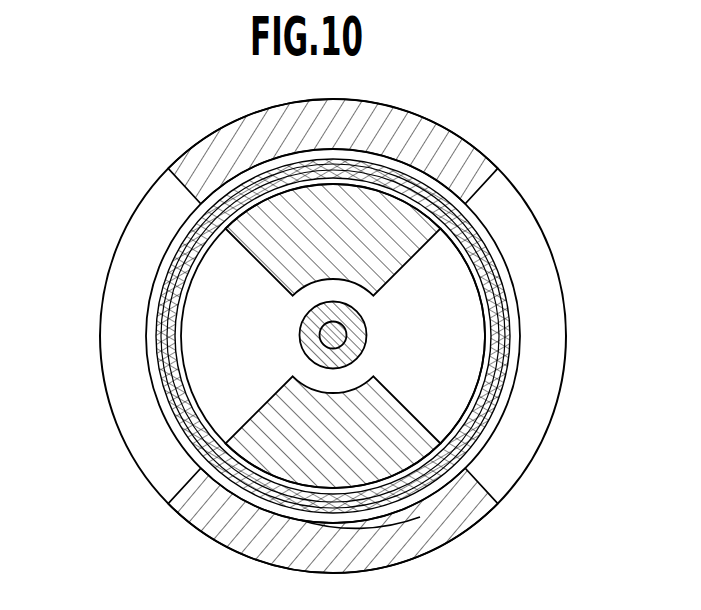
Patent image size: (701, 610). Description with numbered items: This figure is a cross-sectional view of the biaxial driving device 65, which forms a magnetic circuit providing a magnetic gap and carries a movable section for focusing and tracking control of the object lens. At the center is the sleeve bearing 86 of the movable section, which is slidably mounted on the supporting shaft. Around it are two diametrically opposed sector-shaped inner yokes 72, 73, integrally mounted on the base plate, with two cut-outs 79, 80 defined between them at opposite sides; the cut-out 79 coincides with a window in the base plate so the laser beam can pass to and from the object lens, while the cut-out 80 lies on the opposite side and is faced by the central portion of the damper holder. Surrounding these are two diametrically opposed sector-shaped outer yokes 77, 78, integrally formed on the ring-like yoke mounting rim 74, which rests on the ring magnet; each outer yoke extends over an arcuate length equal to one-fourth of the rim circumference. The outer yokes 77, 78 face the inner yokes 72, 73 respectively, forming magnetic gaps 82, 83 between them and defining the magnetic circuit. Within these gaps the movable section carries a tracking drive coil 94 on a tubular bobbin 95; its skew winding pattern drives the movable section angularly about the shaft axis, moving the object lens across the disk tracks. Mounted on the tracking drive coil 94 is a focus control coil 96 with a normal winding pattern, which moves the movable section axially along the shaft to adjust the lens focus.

The biaxial driving device 65 is at (320, 330).
The inner yoke 72 is at (250, 240).
The inner yoke 73 is at (262, 422).
The yoke mounting rim 74 is at (122, 427).
The outer yoke 77 is at (398, 117).
The outer yoke 78 is at (279, 557).
The cut-out 79 is at (183, 311).
The cut-out 80 is at (475, 350).
The magnetic gap 82 is at (377, 517).
The magnetic gap 83 is at (263, 160).
The sleeve bearing 86 is at (358, 339).
The tracking drive coil 94 is at (187, 247).
The tubular bobbin 95 is at (473, 262).
The focus control coil 96 is at (190, 230).